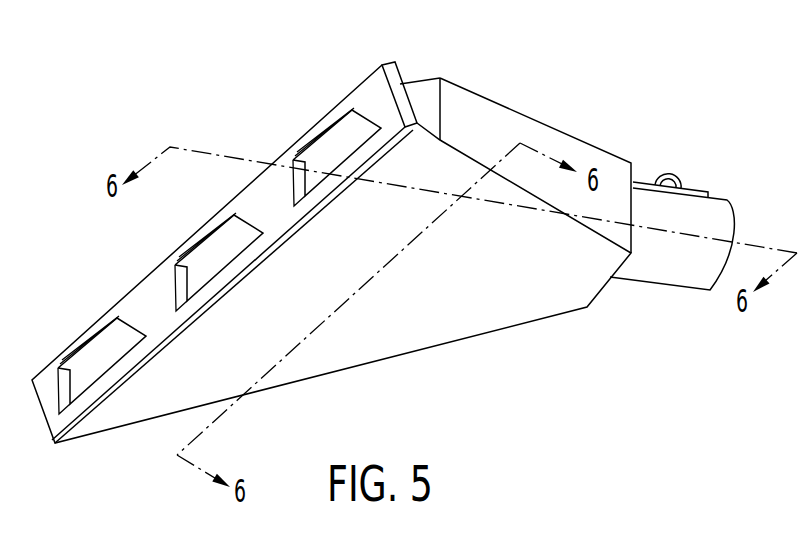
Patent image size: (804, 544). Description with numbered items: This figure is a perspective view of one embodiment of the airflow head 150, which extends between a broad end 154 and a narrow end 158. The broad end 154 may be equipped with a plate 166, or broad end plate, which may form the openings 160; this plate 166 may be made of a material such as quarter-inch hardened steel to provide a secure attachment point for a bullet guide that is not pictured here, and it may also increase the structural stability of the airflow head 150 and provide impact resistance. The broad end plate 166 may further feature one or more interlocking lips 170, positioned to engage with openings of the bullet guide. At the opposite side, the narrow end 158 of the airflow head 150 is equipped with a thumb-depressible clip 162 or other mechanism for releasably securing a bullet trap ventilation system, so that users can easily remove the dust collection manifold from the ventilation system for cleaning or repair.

The airflow head 150 is at (372, 338).
The broad end 154 is at (422, 94).
The narrow end 158 is at (648, 270).
The openings 160 is at (219, 284).
The thumb-depressible clip 162 is at (668, 176).
The broad end plate 166 is at (370, 97).
The interlocking lips 170 is at (303, 150).